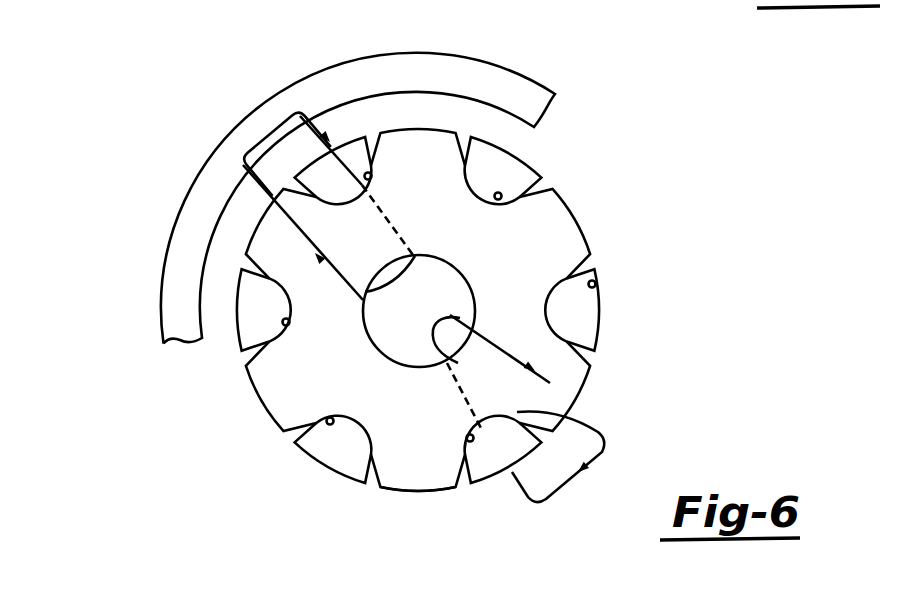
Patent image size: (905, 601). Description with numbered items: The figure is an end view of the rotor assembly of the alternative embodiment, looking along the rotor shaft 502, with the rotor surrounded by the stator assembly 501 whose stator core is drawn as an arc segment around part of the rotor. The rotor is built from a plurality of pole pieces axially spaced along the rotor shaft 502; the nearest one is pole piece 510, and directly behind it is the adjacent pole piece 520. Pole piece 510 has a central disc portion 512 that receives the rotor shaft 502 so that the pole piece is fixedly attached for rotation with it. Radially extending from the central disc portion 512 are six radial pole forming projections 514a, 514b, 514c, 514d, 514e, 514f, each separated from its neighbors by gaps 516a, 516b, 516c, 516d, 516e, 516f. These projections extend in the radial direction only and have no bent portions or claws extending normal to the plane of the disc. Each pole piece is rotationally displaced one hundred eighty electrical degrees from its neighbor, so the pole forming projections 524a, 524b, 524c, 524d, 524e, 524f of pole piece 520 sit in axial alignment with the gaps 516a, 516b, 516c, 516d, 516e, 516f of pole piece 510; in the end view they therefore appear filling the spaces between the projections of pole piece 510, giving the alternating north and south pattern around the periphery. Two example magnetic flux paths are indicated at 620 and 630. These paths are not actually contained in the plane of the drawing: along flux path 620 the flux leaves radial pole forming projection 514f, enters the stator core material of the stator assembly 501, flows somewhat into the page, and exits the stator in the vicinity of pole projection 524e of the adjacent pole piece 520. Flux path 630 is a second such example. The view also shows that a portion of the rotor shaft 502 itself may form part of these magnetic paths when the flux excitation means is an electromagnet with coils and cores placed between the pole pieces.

The stator assembly 501 is at (258, 102).
The rotor shaft 502 is at (470, 303).
The pole piece 510 is at (262, 436).
The central disc portion 512 is at (347, 380).
The radial pole-forming projection 514a is at (262, 397).
The radial pole-forming projection 514b is at (446, 485).
The radial pole-forming projection 514c is at (588, 382).
The radial pole-forming projection 514d is at (568, 198).
The radial pole-forming projection 514e is at (388, 133).
The radial pole-forming projection 514f is at (248, 250).
The gap 516a is at (334, 420).
The gap 516b is at (466, 438).
The gap 516c is at (596, 284).
The gap 516d is at (496, 200).
The gap 516e is at (372, 181).
The gap 516f is at (290, 322).
The pole piece 520 is at (341, 497).
The pole forming projection 524a is at (313, 463).
The pole forming projection 524b is at (543, 452).
The pole forming projection 524c is at (594, 270).
The pole forming projection 524d is at (533, 160).
The pole forming projection 524e is at (332, 148).
The pole forming projection 524f is at (243, 348).
The flux path 620 is at (247, 147).
The flux path 630 is at (531, 500).